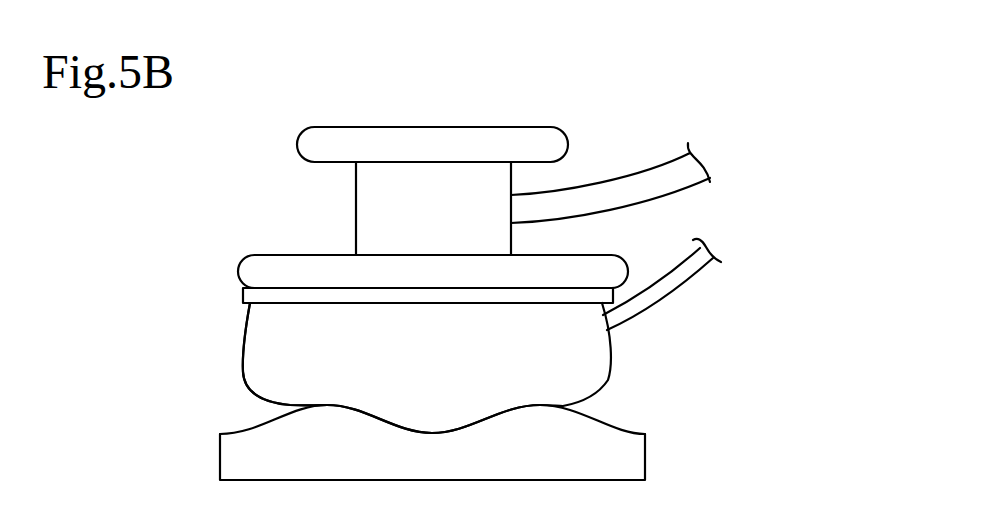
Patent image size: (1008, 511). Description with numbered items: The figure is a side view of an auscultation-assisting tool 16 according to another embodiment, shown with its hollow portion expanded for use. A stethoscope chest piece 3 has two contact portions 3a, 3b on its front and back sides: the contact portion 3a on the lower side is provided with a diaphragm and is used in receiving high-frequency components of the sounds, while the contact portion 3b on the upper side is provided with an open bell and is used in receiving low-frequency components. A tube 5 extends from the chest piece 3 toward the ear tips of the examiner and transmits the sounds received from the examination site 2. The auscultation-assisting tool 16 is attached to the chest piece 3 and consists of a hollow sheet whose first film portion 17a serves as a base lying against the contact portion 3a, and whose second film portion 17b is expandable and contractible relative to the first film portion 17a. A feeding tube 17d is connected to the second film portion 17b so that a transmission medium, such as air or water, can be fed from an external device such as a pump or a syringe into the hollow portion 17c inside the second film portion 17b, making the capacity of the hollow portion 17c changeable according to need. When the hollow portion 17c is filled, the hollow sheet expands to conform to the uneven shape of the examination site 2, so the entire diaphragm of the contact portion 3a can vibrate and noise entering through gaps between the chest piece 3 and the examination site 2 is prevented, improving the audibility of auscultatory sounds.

The examination site 2 is at (640, 457).
The chest piece 3 is at (356, 212).
The contact portion 3a is at (238, 272).
The contact portion 3b is at (441, 127).
The tube 5 is at (643, 175).
The auscultation-assisting tool 16 is at (592, 350).
The first film portion 17a is at (243, 297).
The second film portion 17b is at (243, 380).
The hollow portion 17c is at (263, 338).
The feeding tube 17d is at (663, 277).